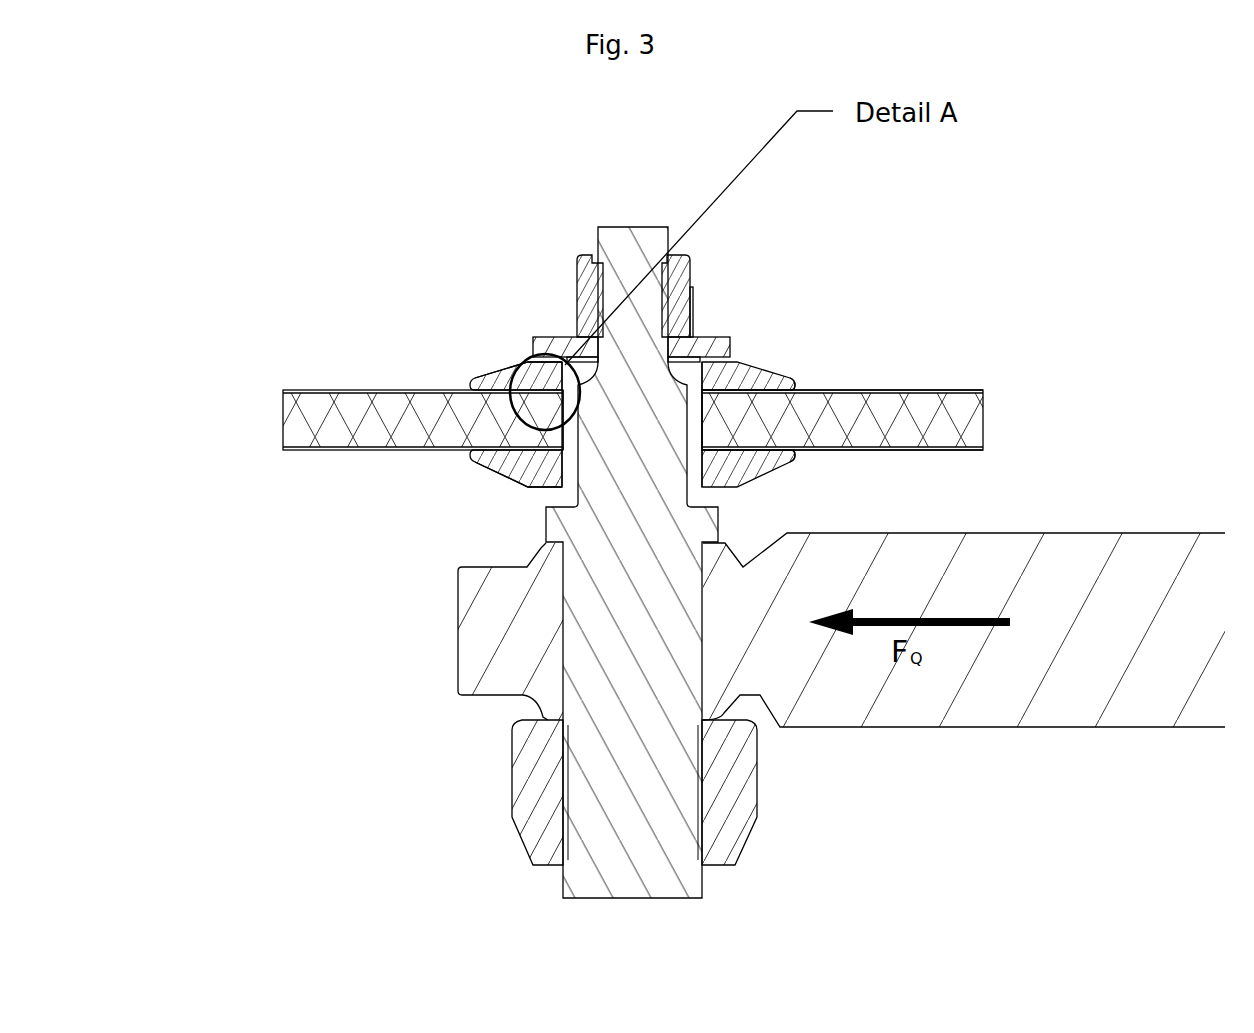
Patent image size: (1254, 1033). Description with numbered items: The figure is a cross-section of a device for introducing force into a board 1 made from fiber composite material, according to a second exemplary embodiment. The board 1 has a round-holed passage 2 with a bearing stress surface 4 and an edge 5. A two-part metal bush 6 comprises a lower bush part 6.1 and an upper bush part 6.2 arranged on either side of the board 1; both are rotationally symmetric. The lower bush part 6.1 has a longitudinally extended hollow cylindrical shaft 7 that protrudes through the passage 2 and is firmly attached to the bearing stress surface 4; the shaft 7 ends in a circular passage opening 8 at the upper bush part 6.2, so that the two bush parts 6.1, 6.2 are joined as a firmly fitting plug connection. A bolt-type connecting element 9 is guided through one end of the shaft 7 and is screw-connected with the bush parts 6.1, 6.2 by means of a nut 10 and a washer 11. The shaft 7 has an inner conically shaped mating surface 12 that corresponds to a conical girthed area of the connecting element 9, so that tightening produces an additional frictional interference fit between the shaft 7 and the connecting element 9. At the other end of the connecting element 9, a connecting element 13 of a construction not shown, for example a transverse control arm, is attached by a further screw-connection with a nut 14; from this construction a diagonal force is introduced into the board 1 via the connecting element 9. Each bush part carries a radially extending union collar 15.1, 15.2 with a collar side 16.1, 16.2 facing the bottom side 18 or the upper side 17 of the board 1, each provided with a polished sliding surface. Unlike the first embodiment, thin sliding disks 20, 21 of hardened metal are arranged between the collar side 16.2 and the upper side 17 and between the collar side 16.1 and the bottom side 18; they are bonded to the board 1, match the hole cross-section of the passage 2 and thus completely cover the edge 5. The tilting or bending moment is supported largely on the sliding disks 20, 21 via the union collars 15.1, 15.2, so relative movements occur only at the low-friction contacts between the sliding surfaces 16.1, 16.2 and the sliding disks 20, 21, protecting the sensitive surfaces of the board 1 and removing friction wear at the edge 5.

The board 1 is at (415, 408).
The passage 2 is at (571, 420).
The bearing stress surface 4 is at (543, 425).
The edge 5 is at (540, 387).
The two-part metal bush 6 is at (352, 396).
The lower bush part 6.1 is at (527, 471).
The upper bush part 6.2 is at (556, 392).
The hollow cylindrical shaft 7 is at (560, 438).
The passage opening 8 is at (936, 291).
The connecting element 9 is at (648, 550).
The nut 10 is at (583, 298).
The washer 11 is at (707, 342).
The mating surface 12 is at (562, 418).
The connecting element 13 is at (483, 647).
The nut 14 is at (532, 793).
The union collar 15.1 is at (747, 460).
The union collar 15.2 is at (755, 378).
The collar side 16.1 is at (753, 448).
The collar side 16.2 is at (793, 382).
The upper side 17 is at (923, 389).
The bottom side 18 is at (923, 450).
The sliding disk 20 is at (464, 385).
The sliding disk 21 is at (540, 443).